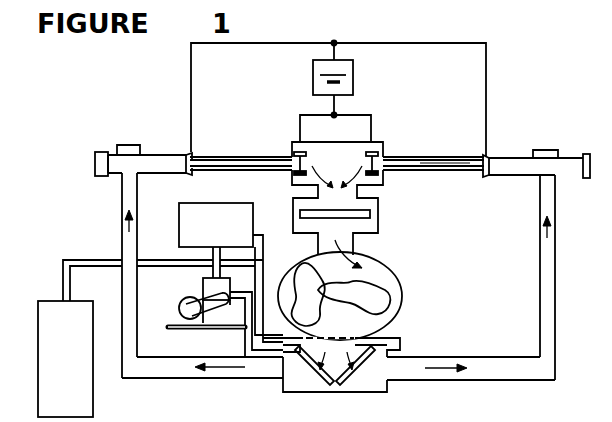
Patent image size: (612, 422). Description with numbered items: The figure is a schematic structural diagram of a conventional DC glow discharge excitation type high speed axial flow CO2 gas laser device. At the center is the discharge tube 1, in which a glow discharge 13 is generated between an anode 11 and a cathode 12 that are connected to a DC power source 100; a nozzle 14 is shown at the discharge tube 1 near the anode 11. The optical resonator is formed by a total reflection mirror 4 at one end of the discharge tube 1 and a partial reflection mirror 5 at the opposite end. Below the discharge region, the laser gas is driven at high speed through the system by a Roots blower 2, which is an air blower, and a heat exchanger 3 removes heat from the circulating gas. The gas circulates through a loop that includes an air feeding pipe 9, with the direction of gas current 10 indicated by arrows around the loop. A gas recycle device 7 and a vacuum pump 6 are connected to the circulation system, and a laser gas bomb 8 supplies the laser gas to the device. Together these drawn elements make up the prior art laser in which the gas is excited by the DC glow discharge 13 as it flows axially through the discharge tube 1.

The discharge tube 1 is at (430, 157).
The Roots blower 2 is at (403, 290).
The heat exchanger 3 is at (370, 219).
The total reflection mirror 4 is at (96, 160).
The partial reflection mirror 5 is at (584, 155).
The vacuum pump 6 is at (182, 315).
The gas recycle device 7 is at (179, 226).
The laser gas bomb 8 is at (50, 301).
The air feeding pipe 9 is at (478, 380).
The direction of gas current 10 is at (437, 371).
The anode 11 is at (486, 160).
The cathode 12 is at (378, 143).
The glow discharge 13 is at (445, 170).
The nozzle 14 is at (505, 158).
The DC power source 100 is at (343, 60).